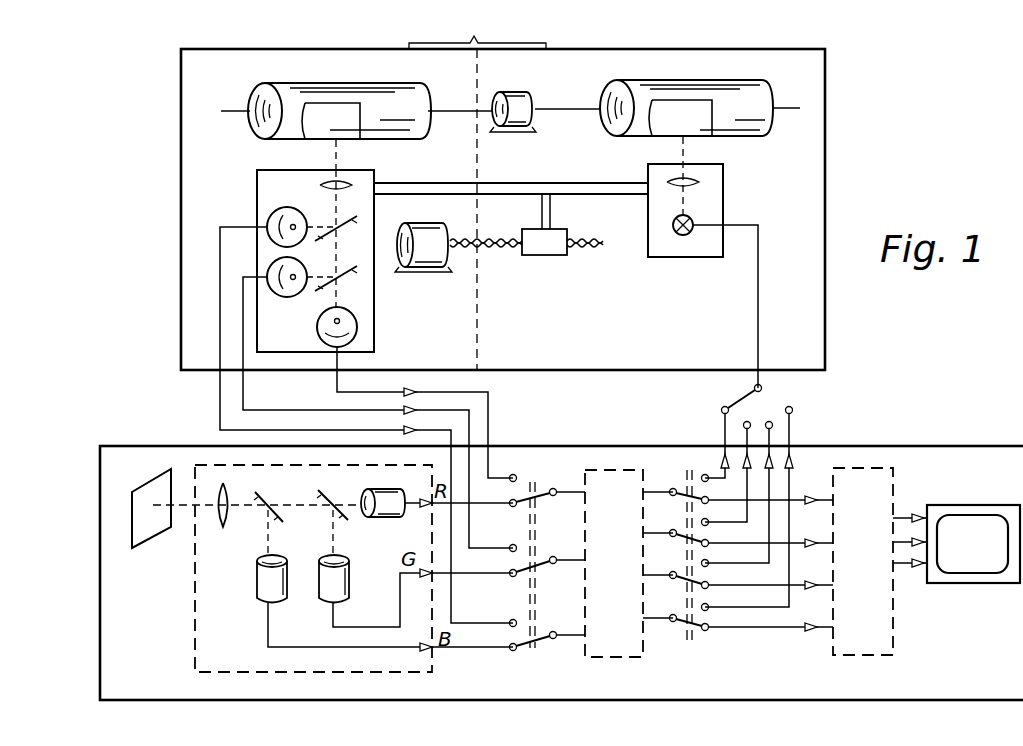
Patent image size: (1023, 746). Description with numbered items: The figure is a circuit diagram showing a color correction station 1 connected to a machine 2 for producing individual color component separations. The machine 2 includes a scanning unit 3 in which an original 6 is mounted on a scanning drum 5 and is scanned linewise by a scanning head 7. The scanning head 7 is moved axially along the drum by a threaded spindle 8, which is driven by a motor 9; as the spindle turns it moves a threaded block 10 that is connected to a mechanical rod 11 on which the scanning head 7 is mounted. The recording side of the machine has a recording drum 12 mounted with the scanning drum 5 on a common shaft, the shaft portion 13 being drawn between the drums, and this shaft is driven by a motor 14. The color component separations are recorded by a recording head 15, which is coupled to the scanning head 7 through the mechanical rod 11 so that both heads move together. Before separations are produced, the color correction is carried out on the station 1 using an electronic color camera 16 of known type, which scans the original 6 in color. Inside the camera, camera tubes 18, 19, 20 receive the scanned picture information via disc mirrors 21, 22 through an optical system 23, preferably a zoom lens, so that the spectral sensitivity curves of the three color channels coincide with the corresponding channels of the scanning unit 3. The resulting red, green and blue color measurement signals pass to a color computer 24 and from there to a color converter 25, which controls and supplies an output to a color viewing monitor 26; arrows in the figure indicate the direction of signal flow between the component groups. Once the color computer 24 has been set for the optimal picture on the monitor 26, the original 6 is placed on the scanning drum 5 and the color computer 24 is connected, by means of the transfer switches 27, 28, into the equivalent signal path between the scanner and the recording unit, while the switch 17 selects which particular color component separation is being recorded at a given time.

The color correction station 1 is at (918, 452).
The machine 2 is at (477, 189).
The scanning unit 3 is at (186, 192).
The scanning drum 5 is at (372, 107).
The original 6 is at (304, 136).
The scanning head 7 is at (360, 324).
The threaded spindle 8 is at (492, 248).
The motor 9 is at (438, 236).
The threaded block 10 is at (538, 250).
The mechanical rod 11 is at (450, 182).
The recording drum 12 is at (745, 118).
The shaft 13 is at (566, 102).
The motor 14 is at (520, 98).
The recording head 15 is at (716, 196).
The electronic color camera 16 is at (212, 654).
The switch 17 is at (774, 395).
The camera tube 18 is at (384, 512).
The camera tube 19 is at (326, 590).
The camera tube 20 is at (262, 588).
The disc mirror 21 is at (333, 500).
The disc mirror 22 is at (268, 500).
The optical system 23 is at (226, 524).
The color computer 24 is at (636, 643).
The color converter 25 is at (846, 652).
The color viewing monitor 26 is at (967, 514).
The transfer switch 27 is at (536, 490).
The transfer switch 28 is at (688, 484).